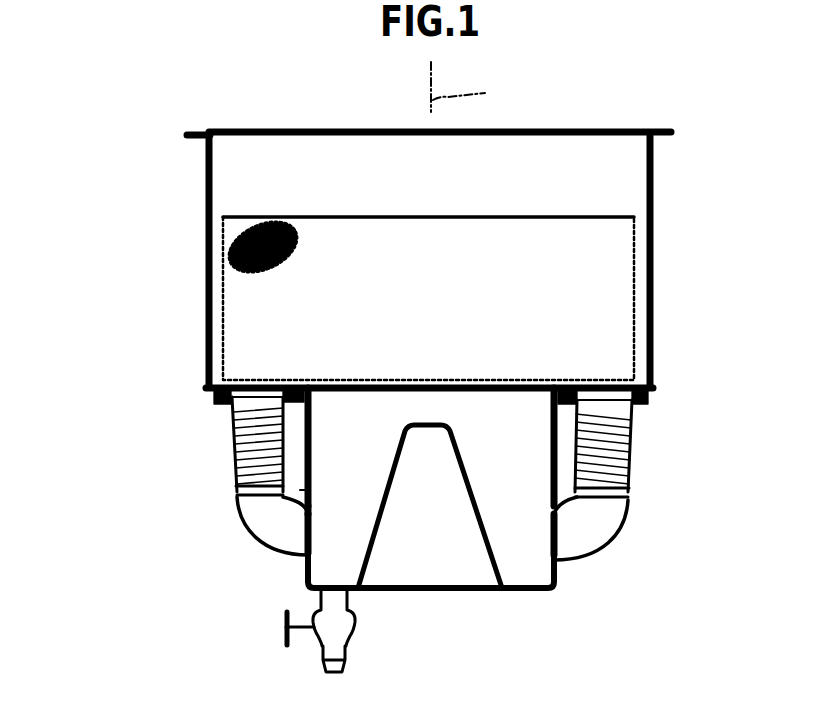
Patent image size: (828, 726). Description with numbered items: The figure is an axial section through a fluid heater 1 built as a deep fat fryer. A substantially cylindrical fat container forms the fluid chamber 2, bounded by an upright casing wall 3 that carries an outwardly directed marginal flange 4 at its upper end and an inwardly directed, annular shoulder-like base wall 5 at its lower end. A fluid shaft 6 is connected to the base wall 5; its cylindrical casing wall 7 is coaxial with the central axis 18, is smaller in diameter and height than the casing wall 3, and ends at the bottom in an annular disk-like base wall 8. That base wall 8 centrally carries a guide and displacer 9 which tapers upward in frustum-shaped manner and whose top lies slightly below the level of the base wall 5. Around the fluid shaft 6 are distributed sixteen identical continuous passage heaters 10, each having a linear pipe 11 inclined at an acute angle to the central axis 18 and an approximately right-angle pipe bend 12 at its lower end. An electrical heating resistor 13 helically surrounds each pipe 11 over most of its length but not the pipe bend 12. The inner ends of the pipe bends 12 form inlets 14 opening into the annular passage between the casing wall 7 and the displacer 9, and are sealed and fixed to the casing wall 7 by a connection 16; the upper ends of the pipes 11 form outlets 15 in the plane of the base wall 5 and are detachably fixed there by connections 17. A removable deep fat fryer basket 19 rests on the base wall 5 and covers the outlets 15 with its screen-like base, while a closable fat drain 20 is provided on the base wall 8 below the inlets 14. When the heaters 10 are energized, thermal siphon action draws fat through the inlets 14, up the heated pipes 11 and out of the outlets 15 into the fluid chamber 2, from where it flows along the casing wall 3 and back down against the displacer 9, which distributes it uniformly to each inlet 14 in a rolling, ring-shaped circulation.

The fluid heater 1 is at (92, 111).
The fluid chamber 2 is at (157, 244).
The casing wall 3 is at (206, 178).
The marginal flange 4 is at (203, 134).
The base wall 5 is at (566, 387).
The fluid shaft 6 is at (471, 404).
The casing wall 7 is at (302, 482).
The base wall 8 is at (521, 590).
The guide and displacer 9 is at (412, 428).
The passage heater 10 is at (194, 506).
The pipe 11 is at (236, 420).
The pipe bend 12 is at (251, 539).
The heating resistor 13 is at (236, 448).
The inlet 14 is at (322, 540).
The outlet 15 is at (258, 386).
The connection 16 is at (304, 500).
The connection 17 is at (220, 398).
The central axis 18 is at (474, 87).
The deep fat fryer basket 19 is at (300, 218).
The fat drain 20 is at (355, 628).